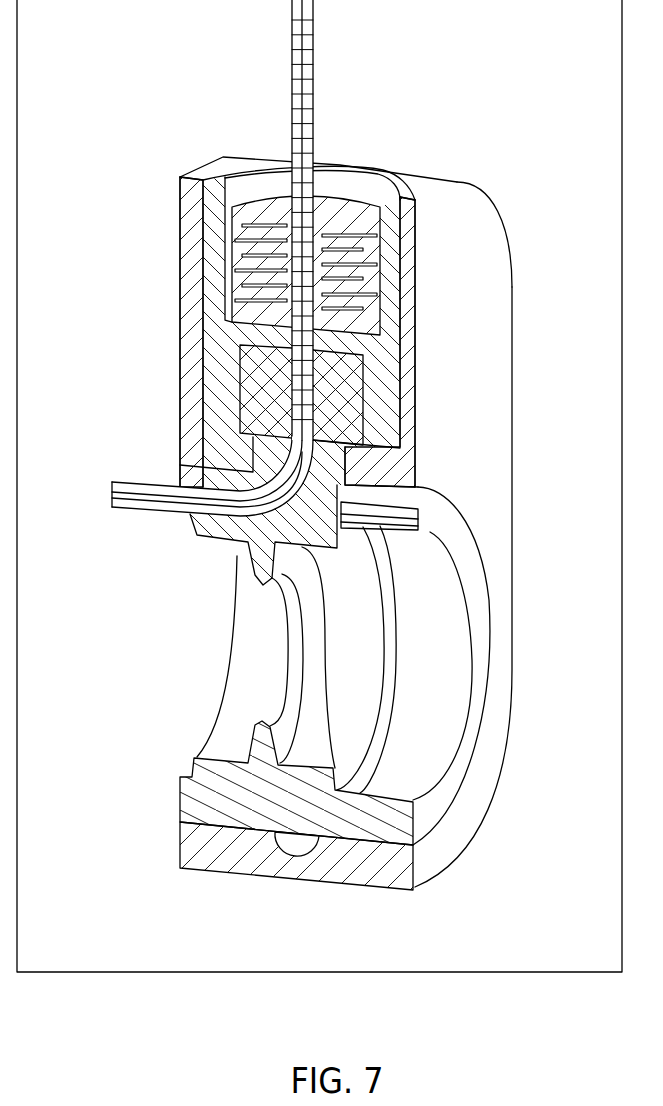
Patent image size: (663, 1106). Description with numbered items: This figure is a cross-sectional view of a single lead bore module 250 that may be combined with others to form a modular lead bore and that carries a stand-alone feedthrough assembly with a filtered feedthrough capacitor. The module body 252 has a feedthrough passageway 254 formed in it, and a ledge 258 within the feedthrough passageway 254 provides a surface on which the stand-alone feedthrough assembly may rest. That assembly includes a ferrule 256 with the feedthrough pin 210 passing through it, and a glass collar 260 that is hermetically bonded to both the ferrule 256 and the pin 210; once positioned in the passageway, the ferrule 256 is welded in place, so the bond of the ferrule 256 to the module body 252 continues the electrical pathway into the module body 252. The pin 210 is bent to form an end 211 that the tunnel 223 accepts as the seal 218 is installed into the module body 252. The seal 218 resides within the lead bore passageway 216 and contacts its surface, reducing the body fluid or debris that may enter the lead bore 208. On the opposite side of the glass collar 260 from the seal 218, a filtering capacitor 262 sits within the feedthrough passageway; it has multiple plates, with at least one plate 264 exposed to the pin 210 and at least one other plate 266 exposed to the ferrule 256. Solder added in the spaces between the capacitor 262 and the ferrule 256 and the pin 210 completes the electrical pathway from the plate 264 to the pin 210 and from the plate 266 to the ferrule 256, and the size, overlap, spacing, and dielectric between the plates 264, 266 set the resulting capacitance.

The lead bore 208 is at (335, 647).
The feedthrough pin 210 is at (302, 72).
The end 211 is at (110, 493).
The lead bore passageway 216 is at (480, 540).
The seal 218 is at (432, 802).
The tunnel 223 is at (226, 536).
The lead bore module 250 is at (550, 272).
The module body 252 is at (475, 210).
The feedthrough passageway 254 is at (203, 182).
The ferrule 256 is at (213, 272).
The ledge 258 is at (220, 435).
The glass collar 260 is at (337, 403).
The filtering capacitor 262 is at (355, 180).
The plate 264 is at (266, 225).
The plate 266 is at (357, 257).